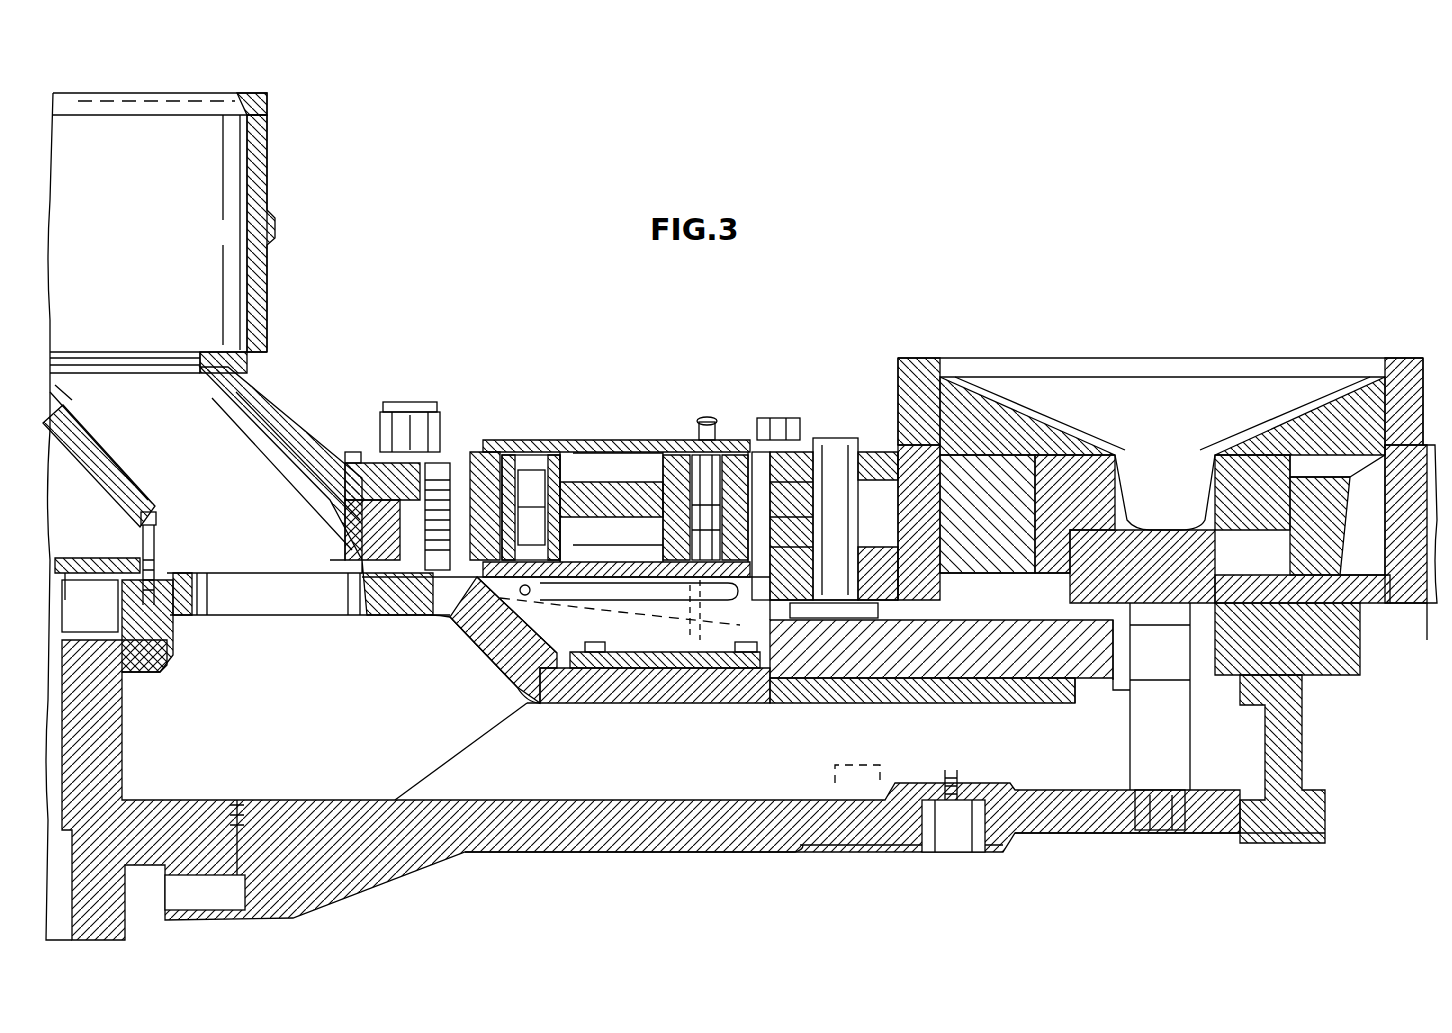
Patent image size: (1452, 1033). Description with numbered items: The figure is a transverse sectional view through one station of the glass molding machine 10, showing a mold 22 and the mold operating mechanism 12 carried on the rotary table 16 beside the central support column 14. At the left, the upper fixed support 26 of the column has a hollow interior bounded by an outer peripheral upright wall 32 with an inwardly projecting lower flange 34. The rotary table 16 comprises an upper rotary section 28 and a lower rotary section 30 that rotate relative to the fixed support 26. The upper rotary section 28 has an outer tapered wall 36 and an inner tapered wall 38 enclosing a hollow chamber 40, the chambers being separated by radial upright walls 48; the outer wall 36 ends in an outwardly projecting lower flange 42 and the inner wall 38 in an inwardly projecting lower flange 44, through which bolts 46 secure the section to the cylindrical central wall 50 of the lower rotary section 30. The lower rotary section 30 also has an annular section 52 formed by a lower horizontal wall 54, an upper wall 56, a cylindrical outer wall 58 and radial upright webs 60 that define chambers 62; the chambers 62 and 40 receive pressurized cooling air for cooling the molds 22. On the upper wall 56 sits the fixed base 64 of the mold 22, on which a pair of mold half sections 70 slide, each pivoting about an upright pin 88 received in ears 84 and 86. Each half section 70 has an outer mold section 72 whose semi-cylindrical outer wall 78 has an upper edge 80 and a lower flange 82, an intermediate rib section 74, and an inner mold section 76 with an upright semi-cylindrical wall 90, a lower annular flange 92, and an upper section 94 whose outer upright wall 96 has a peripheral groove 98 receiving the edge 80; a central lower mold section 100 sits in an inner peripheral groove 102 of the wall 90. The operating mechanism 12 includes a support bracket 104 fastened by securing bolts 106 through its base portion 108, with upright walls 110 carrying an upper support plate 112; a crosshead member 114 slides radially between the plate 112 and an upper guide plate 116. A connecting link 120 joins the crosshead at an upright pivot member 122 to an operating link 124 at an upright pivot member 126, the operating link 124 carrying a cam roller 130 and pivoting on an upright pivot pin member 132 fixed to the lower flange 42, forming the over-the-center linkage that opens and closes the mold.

The glass molding machine 10 is at (280, 405).
The mold operating mechanism 12 is at (560, 440).
The central support column 14 is at (140, 92).
The rotary table 16 is at (655, 848).
The mold 22 is at (948, 352).
The upper fixed support 26 is at (275, 140).
The upper rotary section 28 is at (295, 440).
The lower rotary section 30 is at (590, 712).
The outer peripheral upright wall 32 is at (270, 175).
The lower flange 34 is at (225, 345).
The outer tapered wall 36 is at (240, 420).
The inner tapered wall 38 is at (100, 470).
The hollow chamber 40 is at (276, 529).
The outwardly projecting lower flange 42 is at (340, 580).
The inwardly projecting lower flange 44 is at (75, 555).
The bolts 46 is at (150, 560).
The radial upright walls 48 is at (95, 365).
The cylindrical central wall 50 is at (110, 740).
The annular section 52 is at (1003, 858).
The lower horizontal wall 54 is at (1090, 840).
The upper wall 56 is at (1010, 705).
The cylindrical outer wall 58 is at (1305, 760).
The radial upright webs 60 is at (470, 740).
The chambers 62 is at (712, 769).
The base 64 is at (1352, 640).
The mold half section 70 is at (1440, 430).
The outer mold section 72 is at (1437, 600).
The intermediate rib section 74 is at (940, 630).
The inner mold section 76 is at (1010, 400).
The semi-cylindrical outer wall 78 is at (1400, 565).
The upper edge 80 is at (1427, 435).
The lower flange 82 is at (1370, 608).
The ears 84 is at (870, 480).
The ears 86 is at (795, 500).
The upright pin 88 is at (835, 470).
The upright semi-cylindrical wall 90 is at (1080, 470).
The lower annular flange 92 is at (1060, 600).
The upper section 94 is at (1335, 390).
The outer upright wall 96 is at (1355, 440).
The peripheral groove 98 is at (1375, 430).
The lower mold section 100 is at (1150, 630).
The inner peripheral groove 102 is at (1280, 470).
The support bracket 104 is at (495, 657).
The securing bolts 106 is at (598, 655).
The base portion 108 is at (655, 668).
The upright walls 110 is at (694, 623).
The upper support plate 112 is at (470, 640).
The crosshead member 114 is at (662, 470).
The upper guide plate 116 is at (640, 470).
The connecting link 120 is at (600, 470).
The upright pivot member 122 is at (710, 440).
The operating link 124 is at (475, 460).
The upright pivot member 126 is at (520, 470).
The cam roller 130 is at (383, 420).
The upright pivot pin member 132 is at (453, 455).